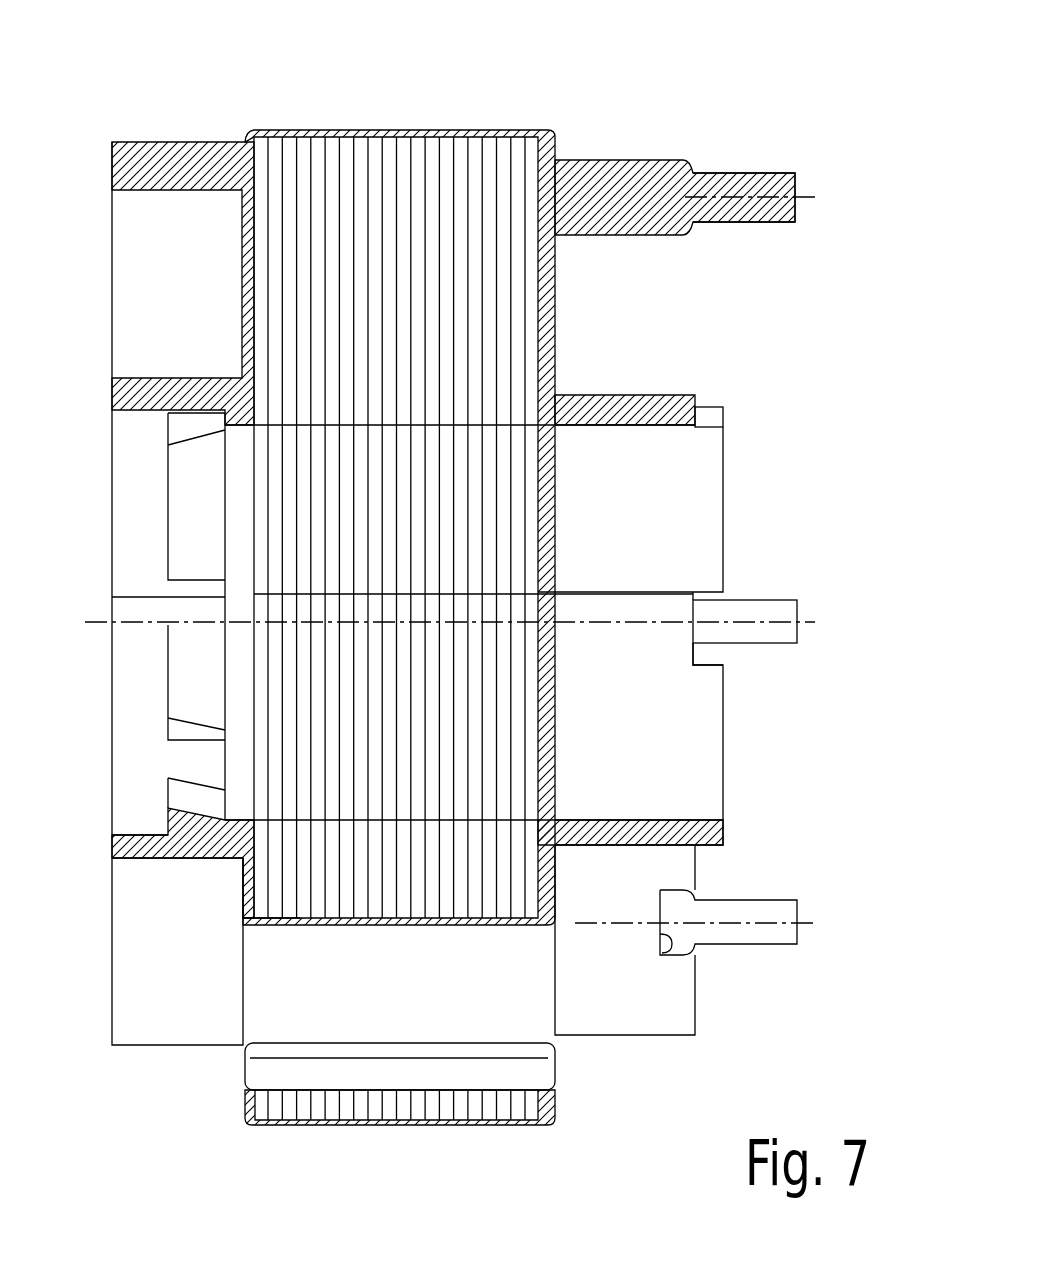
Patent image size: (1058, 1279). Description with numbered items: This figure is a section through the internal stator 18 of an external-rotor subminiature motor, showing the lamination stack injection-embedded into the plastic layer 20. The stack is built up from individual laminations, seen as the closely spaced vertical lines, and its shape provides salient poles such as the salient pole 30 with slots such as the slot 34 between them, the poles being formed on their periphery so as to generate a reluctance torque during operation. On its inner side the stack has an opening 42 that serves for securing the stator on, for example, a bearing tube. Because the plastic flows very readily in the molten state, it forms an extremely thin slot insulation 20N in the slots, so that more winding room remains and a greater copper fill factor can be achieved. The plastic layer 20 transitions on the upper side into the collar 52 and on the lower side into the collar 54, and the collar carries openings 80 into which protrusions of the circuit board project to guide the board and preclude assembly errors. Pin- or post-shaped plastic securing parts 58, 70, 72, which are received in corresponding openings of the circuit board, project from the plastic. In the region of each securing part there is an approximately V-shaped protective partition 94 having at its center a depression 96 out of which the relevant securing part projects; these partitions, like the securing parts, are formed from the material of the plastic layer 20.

The internal stator 18 is at (186, 41).
The plastic layer 20 is at (333, 128).
The slot insulation 20N is at (302, 920).
The salient pole 30 is at (470, 147).
The slot 34 is at (290, 1023).
The opening 42 is at (526, 820).
The collar 52 is at (143, 835).
The collar 54 is at (701, 820).
The plastic securing part 58 is at (732, 192).
The plastic securing part 70 is at (770, 610).
The plastic securing part 72 is at (732, 935).
The opening 80 is at (712, 417).
The protective partition 94 is at (678, 1013).
The depression 96 is at (673, 947).